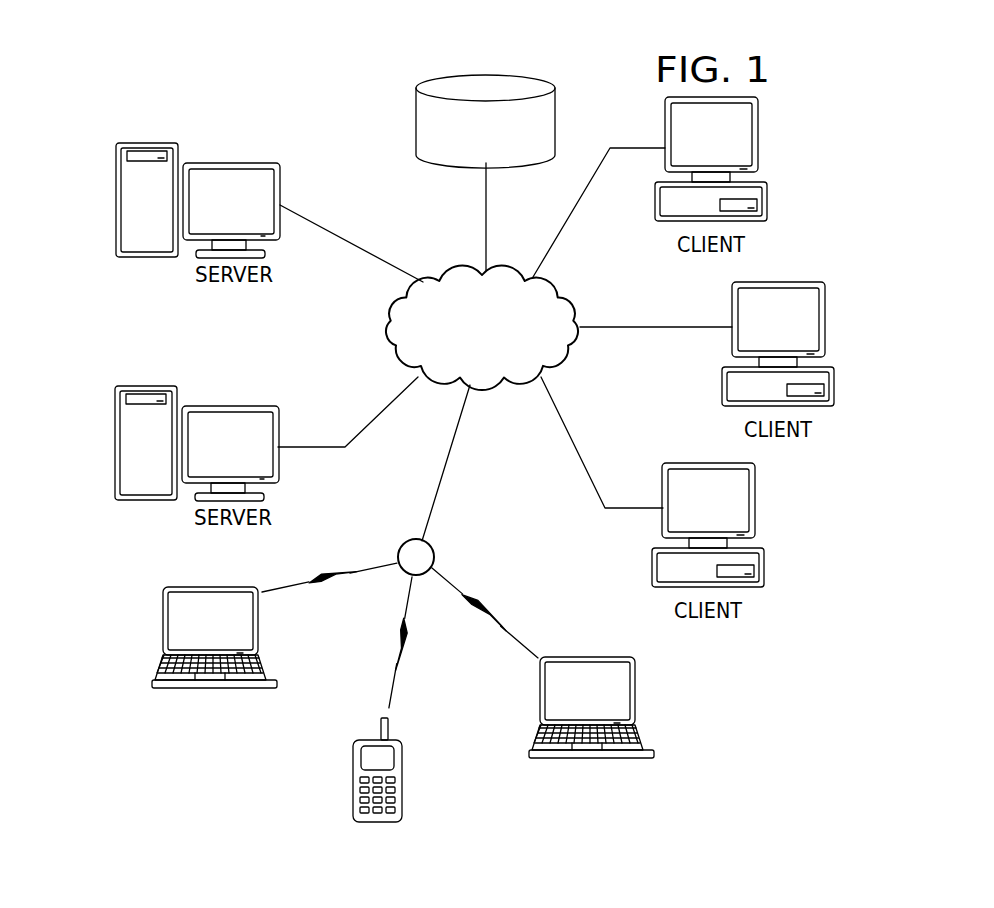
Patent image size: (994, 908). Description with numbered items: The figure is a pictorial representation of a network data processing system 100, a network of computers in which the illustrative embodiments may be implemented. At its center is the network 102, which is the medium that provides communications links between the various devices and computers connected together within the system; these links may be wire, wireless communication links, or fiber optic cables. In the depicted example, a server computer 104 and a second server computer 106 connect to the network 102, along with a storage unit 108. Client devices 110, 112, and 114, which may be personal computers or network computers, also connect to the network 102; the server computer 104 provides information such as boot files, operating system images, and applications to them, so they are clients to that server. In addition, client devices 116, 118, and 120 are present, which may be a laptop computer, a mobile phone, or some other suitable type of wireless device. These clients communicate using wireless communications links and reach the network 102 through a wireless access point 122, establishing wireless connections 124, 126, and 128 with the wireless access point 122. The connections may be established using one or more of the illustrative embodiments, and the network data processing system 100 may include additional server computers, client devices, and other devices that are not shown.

The network data processing system 100 is at (282, 68).
The network 102 is at (452, 272).
The server computer 104 is at (113, 200).
The server computer 106 is at (112, 442).
The storage unit 108 is at (414, 118).
The client device 110 is at (770, 204).
The client device 112 is at (838, 388).
The client device 114 is at (767, 566).
The client device 116 is at (636, 692).
The client device 118 is at (350, 808).
The client device 120 is at (160, 625).
The wireless access point 122 is at (410, 538).
The wireless connection 124 is at (502, 640).
The wireless connection 126 is at (392, 672).
The wireless connection 128 is at (312, 590).